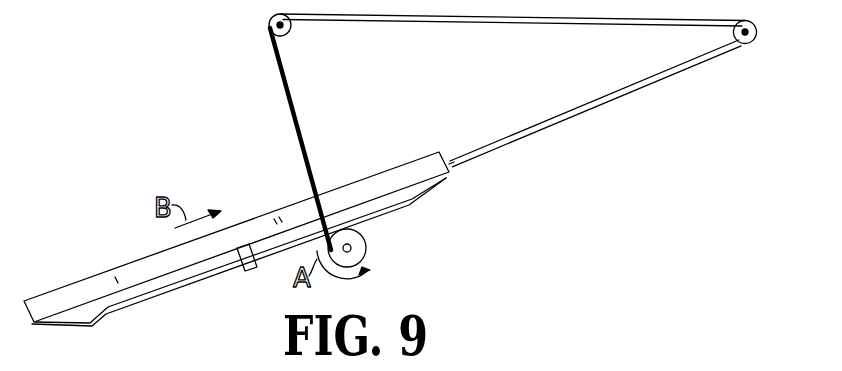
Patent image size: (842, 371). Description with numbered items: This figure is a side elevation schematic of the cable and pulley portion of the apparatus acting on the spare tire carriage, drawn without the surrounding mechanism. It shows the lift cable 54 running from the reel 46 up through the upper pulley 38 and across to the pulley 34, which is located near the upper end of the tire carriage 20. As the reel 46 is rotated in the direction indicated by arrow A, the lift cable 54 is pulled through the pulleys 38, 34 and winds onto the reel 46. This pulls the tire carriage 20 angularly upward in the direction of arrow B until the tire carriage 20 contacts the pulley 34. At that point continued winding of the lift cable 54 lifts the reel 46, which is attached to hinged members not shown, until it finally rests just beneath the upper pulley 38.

The tire carriage 20 is at (78, 276).
The pulley 34 is at (754, 41).
The upper pulley 38 is at (292, 29).
The reel 46 is at (366, 246).
The lift cable 54 is at (296, 94).